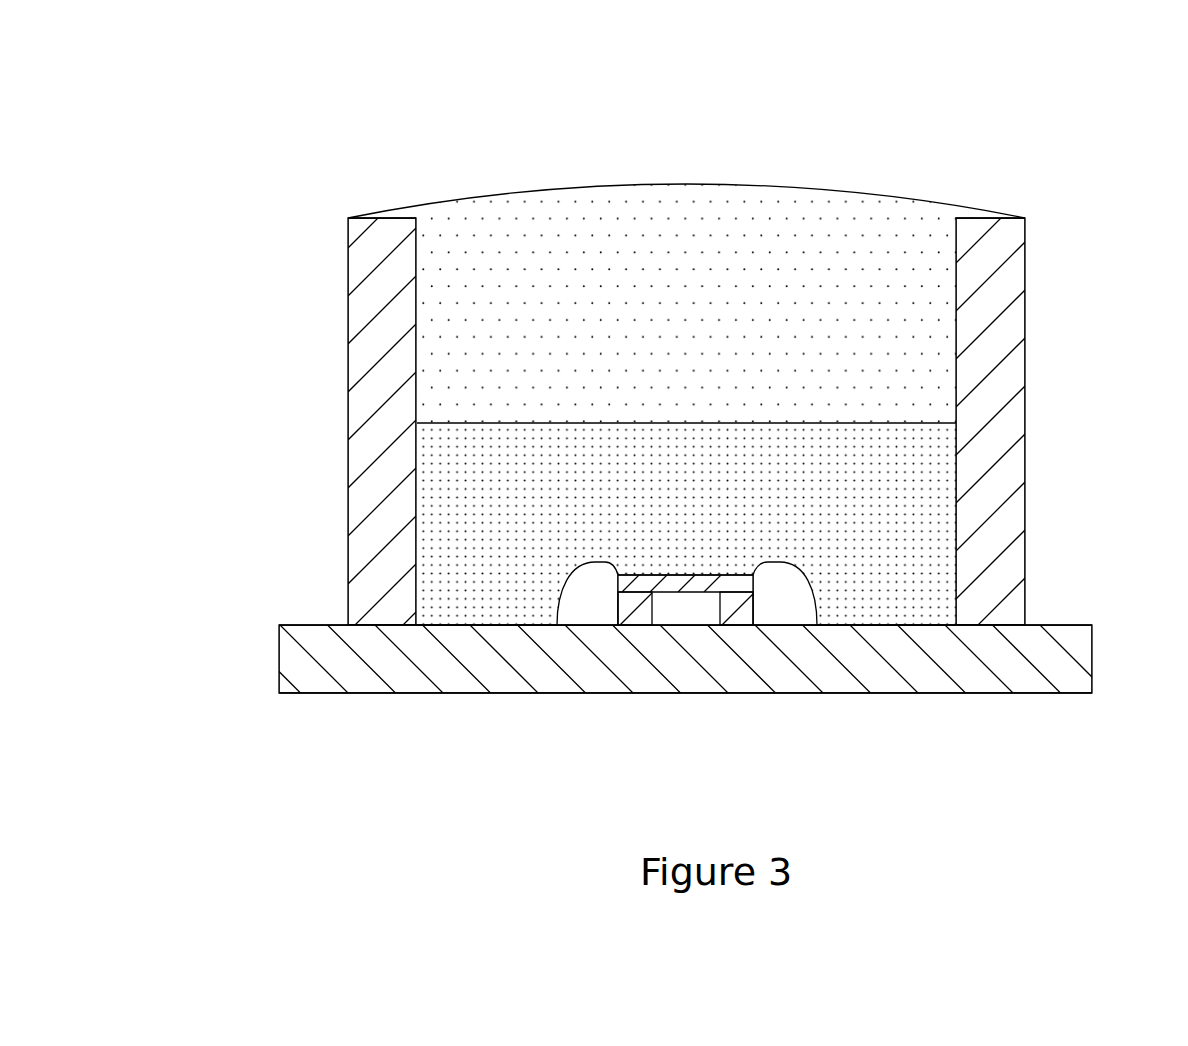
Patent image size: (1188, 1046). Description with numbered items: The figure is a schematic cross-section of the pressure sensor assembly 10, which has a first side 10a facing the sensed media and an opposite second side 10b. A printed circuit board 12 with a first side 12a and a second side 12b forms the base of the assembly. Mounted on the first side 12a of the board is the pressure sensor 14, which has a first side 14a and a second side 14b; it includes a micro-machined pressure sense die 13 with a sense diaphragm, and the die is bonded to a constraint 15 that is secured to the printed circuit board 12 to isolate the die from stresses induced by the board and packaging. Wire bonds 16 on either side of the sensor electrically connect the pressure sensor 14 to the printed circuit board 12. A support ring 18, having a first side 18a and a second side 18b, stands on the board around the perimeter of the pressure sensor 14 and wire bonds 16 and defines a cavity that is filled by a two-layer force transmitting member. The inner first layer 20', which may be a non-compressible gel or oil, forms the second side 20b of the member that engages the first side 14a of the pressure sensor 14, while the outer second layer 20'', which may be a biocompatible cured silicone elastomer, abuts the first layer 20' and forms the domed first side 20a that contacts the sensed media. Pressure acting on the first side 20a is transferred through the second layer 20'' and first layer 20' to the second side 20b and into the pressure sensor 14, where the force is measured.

The sensor assembly 10 is at (256, 100).
The first side of the sensor assembly 10a is at (947, 99).
The second side of the sensor assembly 10b is at (463, 748).
The printed circuit board 12 is at (1078, 658).
The first side of the PCB 12a is at (1064, 612).
The second side of the PCB 12b is at (1061, 706).
The pressure sense die 13 is at (698, 582).
The pressure sensor 14 is at (746, 452).
The first side of the pressure sensor 14a is at (649, 561).
The second side of the pressure sensor 14b is at (655, 617).
The constraint 15 is at (757, 614).
The wire bonds 16 is at (562, 580).
The support ring 18 is at (358, 412).
The first side of the support ring 18a is at (1015, 207).
The second side of the support ring 18b is at (383, 639).
The first layer 20' is at (618, 524).
The second layer 20'' is at (649, 303).
The first side of the force transmitting member 20a is at (752, 172).
The second side of the force transmitting member 20b is at (720, 588).